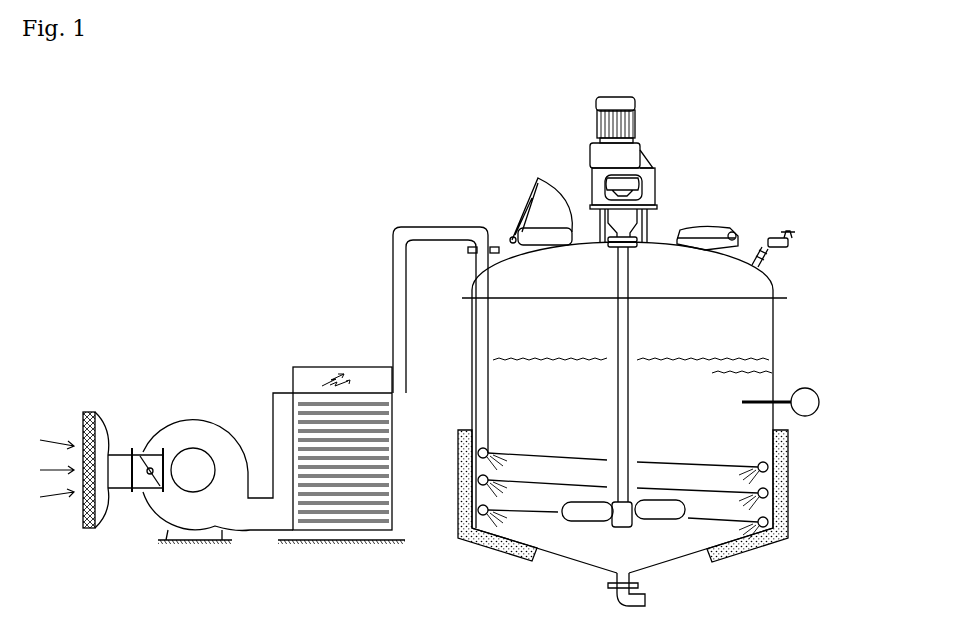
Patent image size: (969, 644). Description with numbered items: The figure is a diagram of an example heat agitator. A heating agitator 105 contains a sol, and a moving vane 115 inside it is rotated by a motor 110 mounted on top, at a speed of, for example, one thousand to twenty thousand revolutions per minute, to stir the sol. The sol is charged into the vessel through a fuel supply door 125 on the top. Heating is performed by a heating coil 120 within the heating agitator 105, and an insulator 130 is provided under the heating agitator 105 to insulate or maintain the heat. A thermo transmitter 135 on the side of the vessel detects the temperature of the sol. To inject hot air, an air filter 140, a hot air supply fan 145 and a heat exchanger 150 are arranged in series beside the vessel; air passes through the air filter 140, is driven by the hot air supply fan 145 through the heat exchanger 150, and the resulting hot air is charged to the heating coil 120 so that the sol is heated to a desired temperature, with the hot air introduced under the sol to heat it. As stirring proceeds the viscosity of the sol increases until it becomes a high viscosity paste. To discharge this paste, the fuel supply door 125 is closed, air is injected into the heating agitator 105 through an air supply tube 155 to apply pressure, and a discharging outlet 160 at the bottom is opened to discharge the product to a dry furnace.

The heating agitator 105 is at (778, 340).
The motor 110 is at (652, 166).
The moving vane 115 is at (685, 517).
The heating coil 120 is at (769, 493).
The fuel supply door 125 is at (700, 227).
The insulator 130 is at (769, 519).
The thermo transmitter 135 is at (819, 402).
The air filter 140 is at (91, 412).
The hot air supply fan 145 is at (196, 418).
The heat exchanger 150 is at (336, 367).
The air supply tube 155 is at (816, 247).
The discharging outlet 160 is at (671, 608).